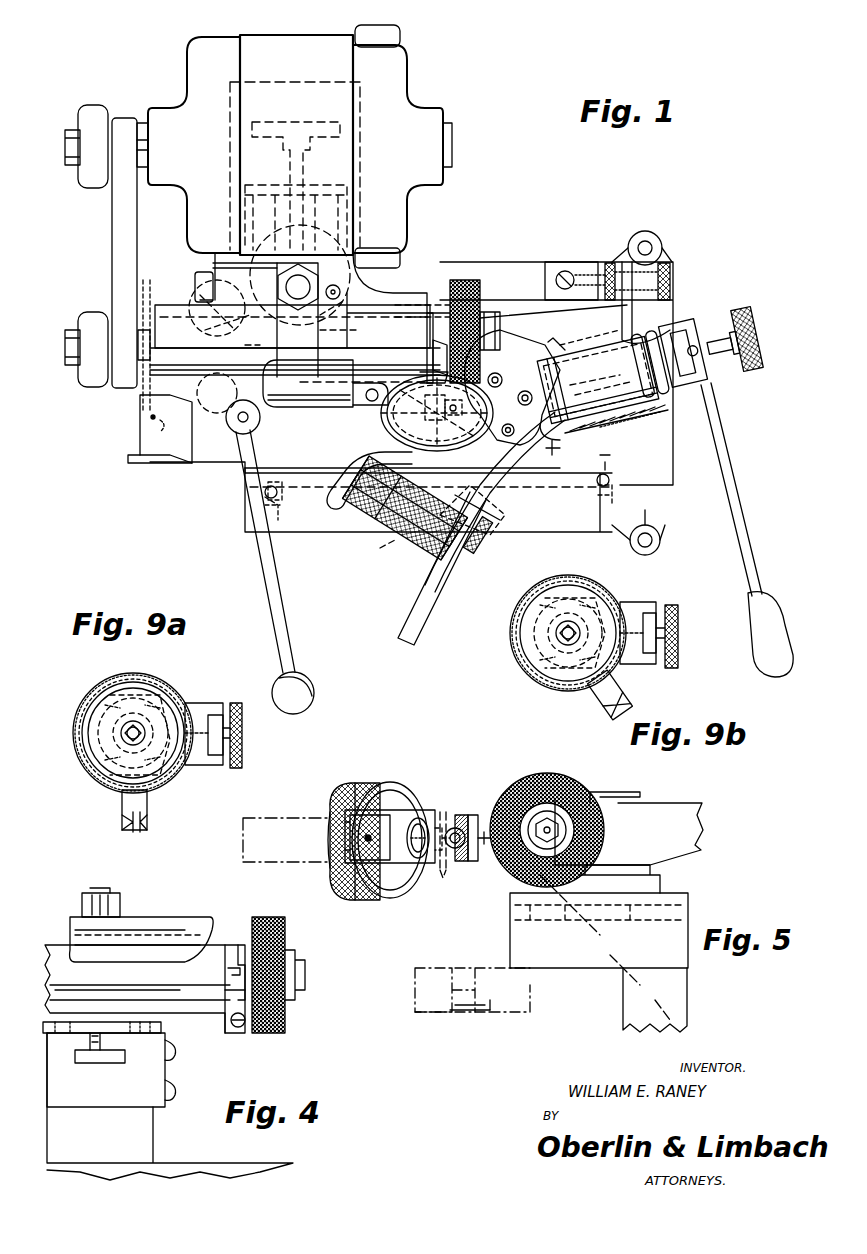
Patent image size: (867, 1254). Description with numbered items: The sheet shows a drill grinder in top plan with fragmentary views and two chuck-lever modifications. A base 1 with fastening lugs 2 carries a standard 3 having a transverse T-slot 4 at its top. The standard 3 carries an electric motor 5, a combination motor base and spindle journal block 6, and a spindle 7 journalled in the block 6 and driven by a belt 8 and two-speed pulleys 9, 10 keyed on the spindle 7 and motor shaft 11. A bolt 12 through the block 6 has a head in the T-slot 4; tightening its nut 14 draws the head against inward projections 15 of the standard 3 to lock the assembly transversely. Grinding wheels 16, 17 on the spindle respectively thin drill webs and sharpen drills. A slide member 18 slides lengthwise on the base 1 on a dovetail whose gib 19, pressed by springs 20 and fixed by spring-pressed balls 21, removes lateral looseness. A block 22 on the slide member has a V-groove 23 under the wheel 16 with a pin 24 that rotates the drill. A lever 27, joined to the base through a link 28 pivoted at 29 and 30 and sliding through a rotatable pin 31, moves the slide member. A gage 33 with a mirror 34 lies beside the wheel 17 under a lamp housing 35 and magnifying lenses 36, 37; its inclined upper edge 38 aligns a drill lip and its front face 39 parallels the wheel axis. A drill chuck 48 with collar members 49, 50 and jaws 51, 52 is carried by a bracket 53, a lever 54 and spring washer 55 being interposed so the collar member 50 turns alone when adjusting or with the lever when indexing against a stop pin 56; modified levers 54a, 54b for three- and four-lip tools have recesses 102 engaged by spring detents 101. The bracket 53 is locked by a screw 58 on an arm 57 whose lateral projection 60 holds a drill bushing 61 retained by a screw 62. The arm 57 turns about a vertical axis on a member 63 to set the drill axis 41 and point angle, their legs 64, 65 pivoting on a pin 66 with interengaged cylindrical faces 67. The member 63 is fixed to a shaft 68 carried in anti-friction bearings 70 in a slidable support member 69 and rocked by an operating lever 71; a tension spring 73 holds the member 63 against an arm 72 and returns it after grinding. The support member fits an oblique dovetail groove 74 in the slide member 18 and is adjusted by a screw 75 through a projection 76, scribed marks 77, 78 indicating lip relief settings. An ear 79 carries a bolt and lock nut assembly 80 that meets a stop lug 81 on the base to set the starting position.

In FIG. 1, the base 1 is at (548, 520).
In FIG. 1, the lugs 2 is at (645, 232).
In FIG. 5, the standard 3 is at (686, 996).
In FIG. 4, the standard 3 is at (140, 1140).
In FIG. 1, the T-slot 4 is at (340, 323).
In FIG. 5, the T-slot 4 is at (676, 918).
In FIG. 4, the T-slot 4 is at (105, 1063).
In FIG. 1, the electric motor 5 is at (390, 88).
In FIG. 1, the combination motor base and spindle journal block 6 is at (402, 304).
In FIG. 5, the combination motor base and spindle journal block 6 is at (662, 810).
In FIG. 4, the combination motor base and spindle journal block 6 is at (205, 1010).
In FIG. 1, the spindle 7 is at (433, 308).
In FIG. 5, the spindle 7 is at (560, 830).
In FIG. 1, the belt 8 is at (118, 234).
In FIG. 1, the two-speed pulley 9 is at (112, 372).
In FIG. 1, the two-speed pulley 10 is at (108, 158).
In FIG. 1, the motor shaft 11 is at (140, 152).
In FIG. 1, the bolt 12 is at (402, 312).
In FIG. 4, the bolt 12 is at (92, 1060).
In FIG. 1, the nut 14 is at (325, 315).
In FIG. 4, the nut 14 is at (118, 900).
In FIG. 4, the inward projections 15 is at (108, 1048).
In FIG. 1, the grinding wheel 16 is at (147, 305).
In FIG. 1, the grinding wheel 17 is at (466, 280).
In FIG. 5, the grinding wheel 17 is at (538, 773).
In FIG. 4, the grinding wheel 17 is at (262, 917).
In FIG. 1, the slide member 18 is at (658, 450).
In FIG. 1, the gib 19 is at (605, 477).
In FIG. 1, the springs 20 is at (270, 498).
In FIG. 1, the balls 21 is at (252, 494).
In FIG. 1, the block 22 is at (140, 450).
In FIG. 1, the V-groove 23 is at (140, 436).
In FIG. 1, the pin 24 is at (153, 417).
In FIG. 1, the lever 27 is at (280, 645).
In FIG. 1, the link 28 is at (240, 325).
In FIG. 1, the pivot connection 29 is at (194, 275).
In FIG. 1, the pivot connection 30 is at (345, 255).
In FIG. 1, the pin 31 is at (238, 432).
In FIG. 1, the gage 33 is at (386, 423).
In FIG. 1, the mirror 34 is at (436, 375).
In FIG. 4, the mirror 34 is at (238, 955).
In FIG. 1, the lamp housing 35 is at (330, 408).
In FIG. 4, the lamp housing 35 is at (137, 965).
In FIG. 1, the magnifying lens 36 is at (432, 368).
In FIG. 1, the magnifying lens 37 is at (403, 390).
In FIG. 4, the straight upper edge 38 is at (228, 970).
In FIG. 4, the front face 39 is at (228, 990).
In FIG. 1, the drill axis 41 is at (380, 548).
In FIG. 1, the drill chuck 48 is at (416, 558).
In FIG. 9A, the drill chuck 48 is at (80, 760).
In FIG. 9B, the drill chuck 48 is at (520, 648).
In FIG. 5, the drill chuck 48 is at (360, 785).
In FIG. 1, the collar member 49 is at (405, 508).
In FIG. 9A, the collar member 49 is at (75, 733).
In FIG. 5, the collar member 49 is at (338, 792).
In FIG. 1, the collar member 50 is at (366, 530).
In FIG. 9A, the collar member 50 is at (92, 698).
In FIG. 9B, the collar member 50 is at (532, 685).
In FIG. 5, the collar member 50 is at (368, 790).
In FIG. 9A, the jaw 51 is at (130, 733).
In FIG. 9B, the jaw 51 is at (565, 633).
In FIG. 9A, the jaw 52 is at (135, 728).
In FIG. 9B, the jaw 52 is at (572, 628).
In FIG. 1, the bracket 53 is at (496, 493).
In FIG. 9A, the bracket 53 is at (194, 705).
In FIG. 9B, the bracket 53 is at (634, 605).
In FIG. 5, the bracket 53 is at (398, 900).
In FIG. 1, the lever 54 is at (330, 490).
In FIG. 5, the lever 54 is at (425, 897).
In FIG. 9A, the lever 54a is at (148, 808).
In FIG. 9B, the lever 54b is at (625, 692).
In FIG. 1, the spring washer 55 is at (390, 521).
In FIG. 5, the spring washer 55 is at (398, 795).
In FIG. 1, the stop pin 56 is at (495, 518).
In FIG. 9A, the stop pin 56 is at (160, 700).
In FIG. 9B, the stop pin 56 is at (612, 598).
In FIG. 1, the arm 57 is at (440, 590).
In FIG. 1, the screw 58 is at (485, 548).
In FIG. 9A, the screw 58 is at (242, 745).
In FIG. 9B, the screw 58 is at (680, 623).
In FIG. 1, the lateral projection 60 is at (490, 447).
In FIG. 5, the lateral projection 60 is at (462, 812).
In FIG. 1, the drill bushing 61 is at (466, 412).
In FIG. 5, the drill bushing 61 is at (468, 812).
In FIG. 1, the screw 62 is at (440, 422).
In FIG. 5, the screw 62 is at (452, 812).
In FIG. 1, the member 63 is at (541, 364).
In FIG. 5, the leg 64 is at (415, 968).
In FIG. 5, the leg 65 is at (415, 1013).
In FIG. 5, the pin 66 is at (492, 1012).
In FIG. 1, the cylindrical faces 67 is at (527, 360).
In FIG. 1, the shaft 68 is at (590, 347).
In FIG. 1, the slidable support member 69 is at (572, 358).
In FIG. 1, the anti-friction bearings 70 is at (600, 385).
In FIG. 1, the operating lever 71 is at (732, 478).
In FIG. 1, the arm 72 is at (561, 442).
In FIG. 1, the tension spring 73 is at (678, 333).
In FIG. 1, the dovetail groove 74 is at (667, 397).
In FIG. 1, the screw 75 is at (757, 328).
In FIG. 1, the projection 76 is at (718, 358).
In FIG. 1, the scribed marks 77 is at (642, 424).
In FIG. 1, the scribed marks 78 is at (634, 423).
In FIG. 1, the ear 79 is at (638, 318).
In FIG. 1, the bolt and lock nut assembly 80 is at (668, 270).
In FIG. 1, the stop lug 81 is at (550, 270).
In FIG. 9A, the spring detents 101 is at (120, 680).
In FIG. 9B, the spring detents 101 is at (552, 580).
In FIG. 9A, the recesses 102 is at (105, 782).
In FIG. 9B, the recesses 102 is at (520, 660).